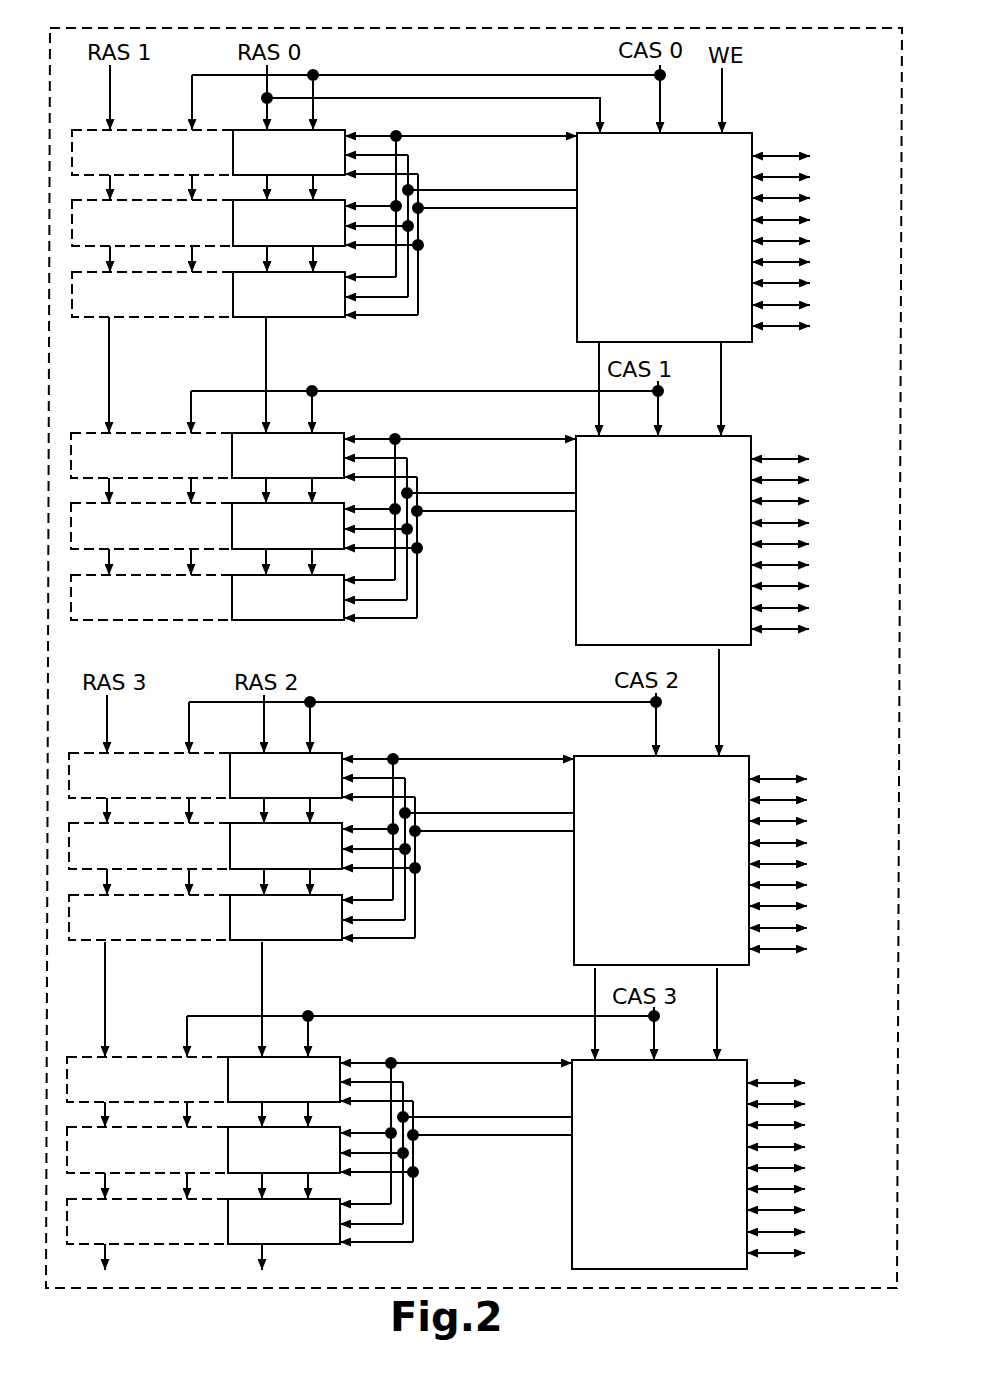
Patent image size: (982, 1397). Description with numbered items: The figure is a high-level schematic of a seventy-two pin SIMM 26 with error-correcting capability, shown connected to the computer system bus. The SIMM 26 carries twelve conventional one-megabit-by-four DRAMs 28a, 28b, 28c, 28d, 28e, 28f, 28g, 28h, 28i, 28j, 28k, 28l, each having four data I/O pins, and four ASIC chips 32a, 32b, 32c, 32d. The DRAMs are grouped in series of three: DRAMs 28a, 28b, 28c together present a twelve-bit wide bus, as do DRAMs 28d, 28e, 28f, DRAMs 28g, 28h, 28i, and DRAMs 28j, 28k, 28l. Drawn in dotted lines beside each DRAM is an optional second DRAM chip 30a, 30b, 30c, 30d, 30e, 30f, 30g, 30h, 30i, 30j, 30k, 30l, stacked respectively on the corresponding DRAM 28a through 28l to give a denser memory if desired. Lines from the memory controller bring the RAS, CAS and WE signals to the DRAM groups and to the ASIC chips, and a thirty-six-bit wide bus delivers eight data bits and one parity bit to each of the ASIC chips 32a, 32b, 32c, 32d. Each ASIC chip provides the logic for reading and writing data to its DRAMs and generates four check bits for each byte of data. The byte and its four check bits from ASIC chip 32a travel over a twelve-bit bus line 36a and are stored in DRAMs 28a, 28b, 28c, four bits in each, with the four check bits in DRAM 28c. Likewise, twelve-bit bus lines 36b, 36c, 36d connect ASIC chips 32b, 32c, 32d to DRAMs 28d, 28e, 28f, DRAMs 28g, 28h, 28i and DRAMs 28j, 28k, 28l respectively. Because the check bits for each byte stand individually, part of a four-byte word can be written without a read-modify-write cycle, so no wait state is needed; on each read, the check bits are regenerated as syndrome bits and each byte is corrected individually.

The SIMM 26 is at (193, 27).
The DRAM 28a is at (289, 152).
The DRAM 28b is at (289, 223).
The DRAM 28c is at (289, 294).
The DRAM 28d is at (288, 455).
The DRAM 28e is at (288, 526).
The DRAM 28f is at (288, 597).
The DRAM 28g is at (286, 775).
The DRAM 28h is at (286, 846).
The DRAM 28i is at (286, 917).
The DRAM 28j is at (284, 1079).
The DRAM 28k is at (284, 1150).
The DRAM 28l is at (284, 1221).
The second DRAM chip 30a is at (152, 152).
The second DRAM chip 30b is at (152, 223).
The second DRAM chip 30c is at (152, 294).
The second DRAM chip 30d is at (151, 455).
The second DRAM chip 30e is at (151, 526).
The second DRAM chip 30f is at (151, 597).
The second DRAM chip 30g is at (149, 775).
The second DRAM chip 30h is at (149, 846).
The second DRAM chip 30i is at (149, 917).
The second DRAM chip 30j is at (147, 1079).
The second DRAM chip 30k is at (147, 1150).
The second DRAM chip 30l is at (147, 1221).
The ASIC chip 32a is at (724, 237).
The ASIC chip 32b is at (730, 540).
The ASIC chip 32c is at (728, 860).
The ASIC chip 32d is at (726, 1164).
The 12-bit bus line 36a is at (450, 138).
The 12-bit bus line 36b is at (460, 513).
The 12-bit bus line 36c is at (458, 833).
The 12-bit bus line 36d is at (456, 1137).